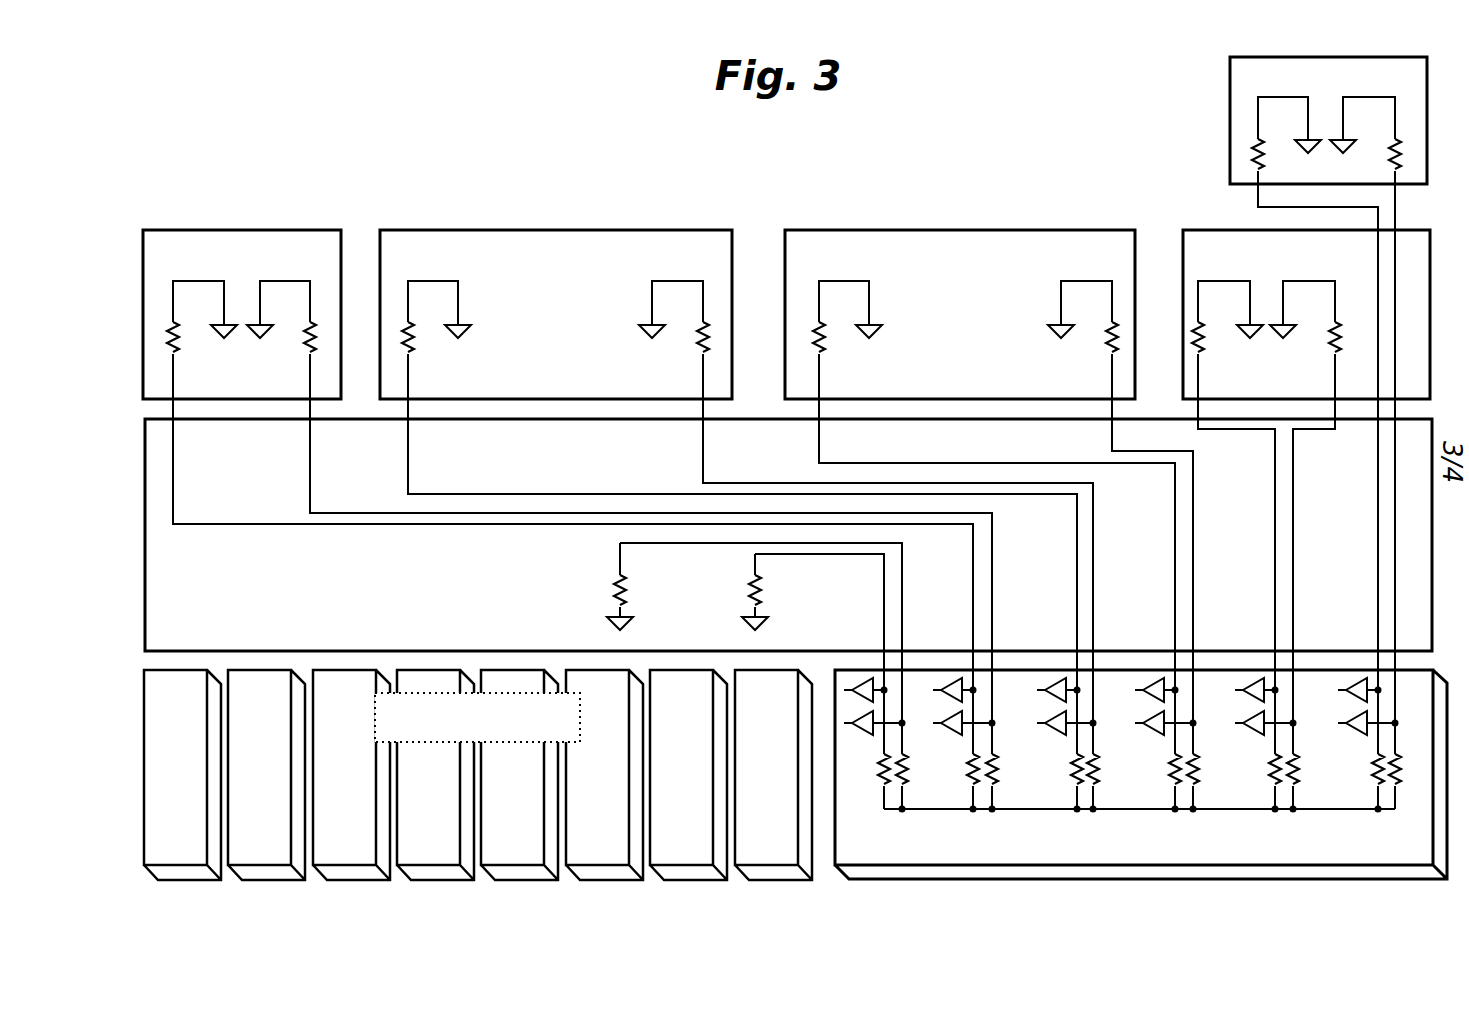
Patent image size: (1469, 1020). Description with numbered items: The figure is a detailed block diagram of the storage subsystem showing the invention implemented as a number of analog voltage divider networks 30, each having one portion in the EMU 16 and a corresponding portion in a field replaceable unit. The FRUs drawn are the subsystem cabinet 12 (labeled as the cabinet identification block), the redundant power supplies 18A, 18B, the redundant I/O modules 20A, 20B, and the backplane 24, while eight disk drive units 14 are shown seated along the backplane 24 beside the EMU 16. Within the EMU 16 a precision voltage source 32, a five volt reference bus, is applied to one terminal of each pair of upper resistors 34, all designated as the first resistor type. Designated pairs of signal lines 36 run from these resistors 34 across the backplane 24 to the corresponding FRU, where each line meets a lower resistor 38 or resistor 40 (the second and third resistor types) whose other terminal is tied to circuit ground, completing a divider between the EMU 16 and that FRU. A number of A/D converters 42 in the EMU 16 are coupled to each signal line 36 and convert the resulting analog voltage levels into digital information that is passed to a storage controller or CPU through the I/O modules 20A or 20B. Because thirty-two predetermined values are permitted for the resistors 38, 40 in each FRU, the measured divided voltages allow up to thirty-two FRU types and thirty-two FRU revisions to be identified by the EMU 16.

The cabinet 12 is at (1230, 88).
The disk drive unit 14 is at (478, 775).
The EMU 16 is at (1428, 672).
The power supply 18A is at (1000, 230).
The power supply 18B is at (663, 230).
The I/O module 20A is at (1183, 240).
The I/O module 20B is at (300, 230).
The backplane 24 is at (1432, 515).
The voltage divider network 30 is at (1416, 730).
The voltage source 32 is at (1136, 808).
The resistor 34 is at (1140, 805).
The signal line 36 is at (786, 469).
The resistor 38 is at (744, 363).
The resistor 40 is at (842, 363).
The A/D converter 42 is at (1110, 672).